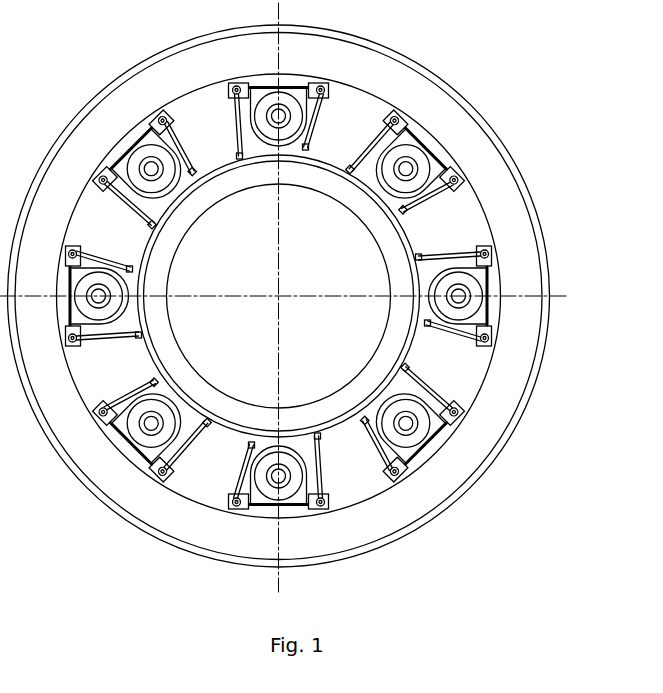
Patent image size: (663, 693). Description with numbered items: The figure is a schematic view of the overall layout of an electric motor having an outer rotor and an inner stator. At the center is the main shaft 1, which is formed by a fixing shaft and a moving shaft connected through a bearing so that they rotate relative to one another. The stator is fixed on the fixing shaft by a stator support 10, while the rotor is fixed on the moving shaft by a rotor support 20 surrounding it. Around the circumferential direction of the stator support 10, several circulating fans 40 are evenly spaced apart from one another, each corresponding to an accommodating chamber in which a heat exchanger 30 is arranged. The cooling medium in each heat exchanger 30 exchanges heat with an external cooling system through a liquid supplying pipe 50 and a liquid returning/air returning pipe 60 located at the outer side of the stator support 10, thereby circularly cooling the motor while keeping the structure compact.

The main shaft 1 is at (305, 185).
The stator support 10 is at (470, 213).
The rotor support 20 is at (433, 72).
The heat exchanger 30 is at (420, 147).
The circulating fan 40 is at (447, 155).
The liquid supplying pipe 50 is at (490, 247).
The liquid returning/air returning pipe 60 is at (490, 330).